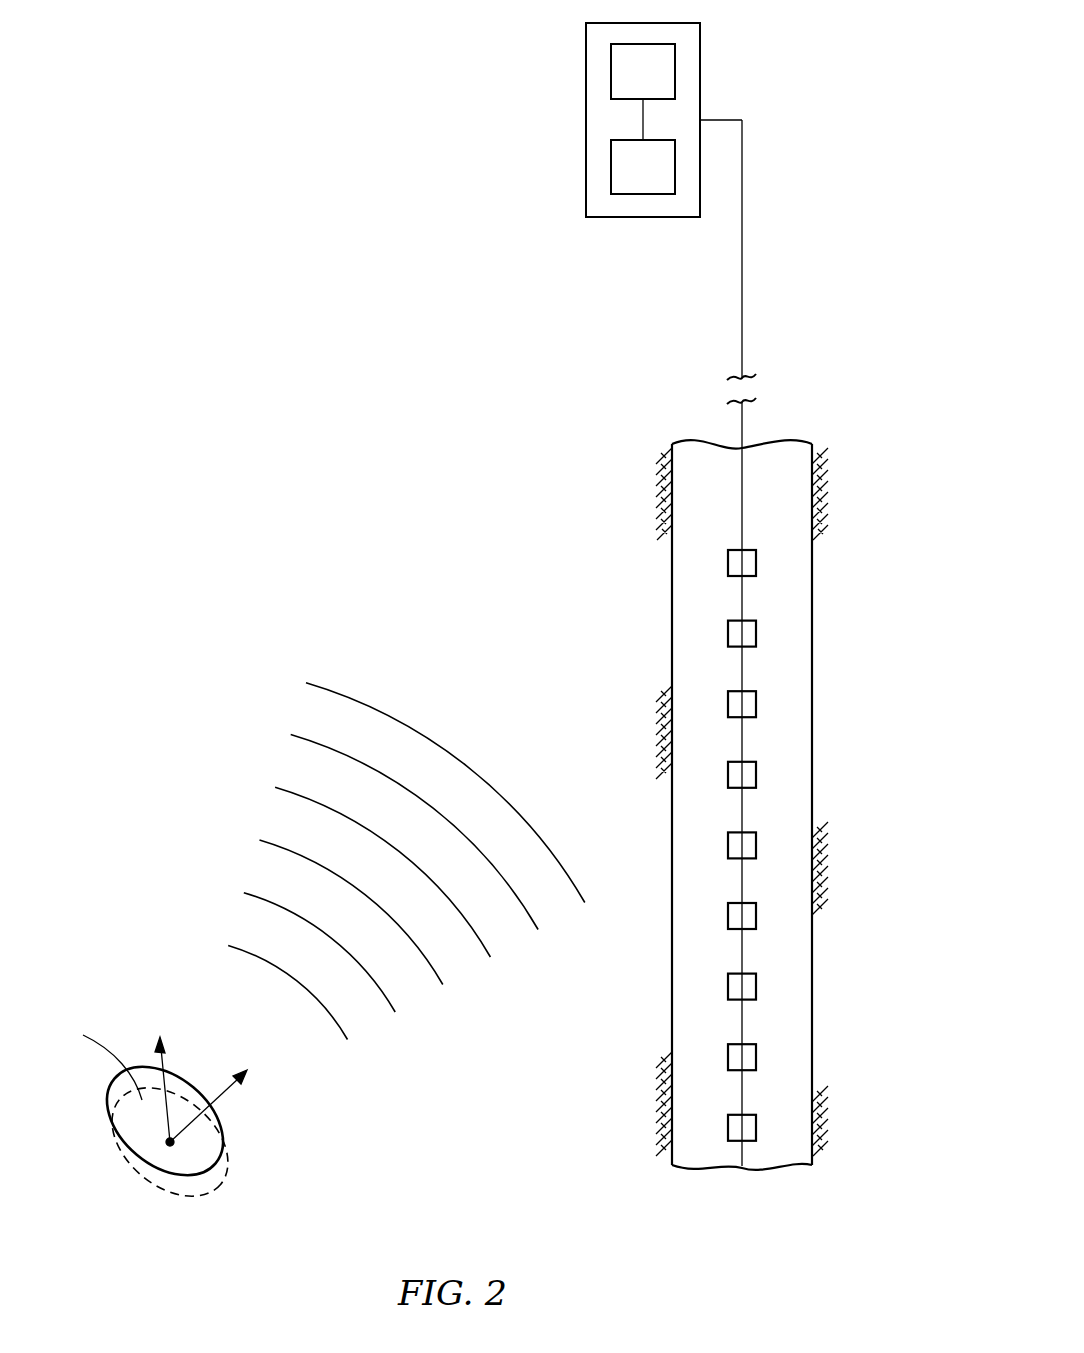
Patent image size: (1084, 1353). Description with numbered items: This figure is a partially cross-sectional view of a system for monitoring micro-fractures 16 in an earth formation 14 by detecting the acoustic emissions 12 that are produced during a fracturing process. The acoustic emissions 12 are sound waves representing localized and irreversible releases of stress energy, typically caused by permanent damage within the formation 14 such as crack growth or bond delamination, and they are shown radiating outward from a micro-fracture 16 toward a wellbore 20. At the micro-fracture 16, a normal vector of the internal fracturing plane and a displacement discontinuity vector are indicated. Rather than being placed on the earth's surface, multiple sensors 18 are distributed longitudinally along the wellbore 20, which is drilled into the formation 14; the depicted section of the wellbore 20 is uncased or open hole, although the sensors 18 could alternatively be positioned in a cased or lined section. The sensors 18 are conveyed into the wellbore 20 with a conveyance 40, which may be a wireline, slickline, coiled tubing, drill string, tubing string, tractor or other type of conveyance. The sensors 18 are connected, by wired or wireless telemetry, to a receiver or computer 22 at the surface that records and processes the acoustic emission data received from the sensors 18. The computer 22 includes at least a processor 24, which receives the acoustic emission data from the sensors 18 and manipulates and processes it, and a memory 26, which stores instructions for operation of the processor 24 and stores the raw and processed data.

The acoustic emissions 12 is at (555, 848).
The earth formation 14 is at (480, 1005).
The micro-fractures 16 is at (220, 1115).
The sensors 18 is at (756, 562).
The wellbore 20 is at (672, 534).
The computer 22 is at (702, 60).
The processor 24 is at (611, 55).
The memory 26 is at (611, 165).
The conveyance 40 is at (741, 598).